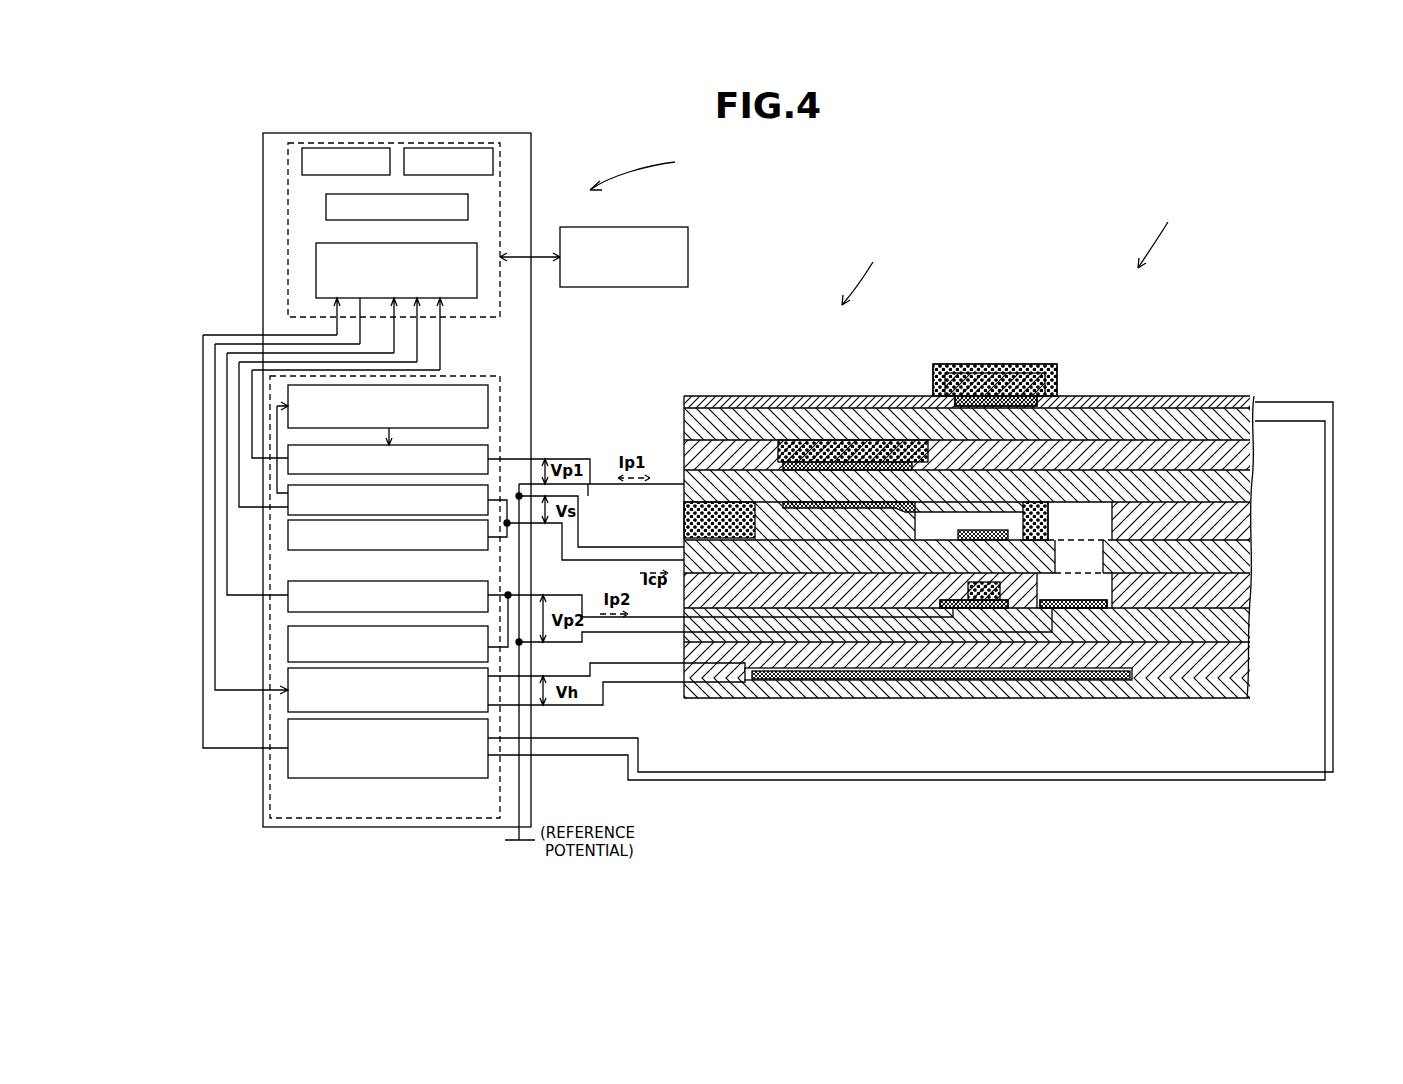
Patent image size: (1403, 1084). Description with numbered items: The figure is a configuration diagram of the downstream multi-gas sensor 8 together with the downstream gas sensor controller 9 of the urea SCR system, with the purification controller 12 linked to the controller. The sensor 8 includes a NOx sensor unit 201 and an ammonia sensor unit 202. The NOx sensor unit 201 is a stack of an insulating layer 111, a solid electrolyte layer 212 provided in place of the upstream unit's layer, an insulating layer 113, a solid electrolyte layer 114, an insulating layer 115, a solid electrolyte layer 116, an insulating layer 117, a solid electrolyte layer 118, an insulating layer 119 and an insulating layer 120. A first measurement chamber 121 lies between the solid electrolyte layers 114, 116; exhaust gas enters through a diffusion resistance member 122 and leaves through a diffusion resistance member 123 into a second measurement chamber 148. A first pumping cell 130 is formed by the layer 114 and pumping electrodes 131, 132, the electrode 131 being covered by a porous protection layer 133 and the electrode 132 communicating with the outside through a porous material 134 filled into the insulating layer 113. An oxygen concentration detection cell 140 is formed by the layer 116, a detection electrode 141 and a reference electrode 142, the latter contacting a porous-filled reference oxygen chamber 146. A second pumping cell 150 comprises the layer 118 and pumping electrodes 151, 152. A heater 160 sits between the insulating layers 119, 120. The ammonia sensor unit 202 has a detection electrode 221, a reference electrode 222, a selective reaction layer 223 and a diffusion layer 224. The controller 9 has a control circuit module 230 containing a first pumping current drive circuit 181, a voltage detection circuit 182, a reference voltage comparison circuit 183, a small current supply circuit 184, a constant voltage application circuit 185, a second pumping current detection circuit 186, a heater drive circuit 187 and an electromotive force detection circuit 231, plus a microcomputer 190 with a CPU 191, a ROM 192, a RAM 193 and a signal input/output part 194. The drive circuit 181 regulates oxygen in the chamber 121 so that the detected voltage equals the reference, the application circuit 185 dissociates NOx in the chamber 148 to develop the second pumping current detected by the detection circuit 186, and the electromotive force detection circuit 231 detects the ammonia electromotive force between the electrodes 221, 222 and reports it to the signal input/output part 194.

The downstream multi-gas sensor 8 is at (1160, 232).
The downstream gas sensor controller 9 is at (640, 167).
The purification controller 12 is at (645, 227).
The insulating layer 111 is at (1255, 398).
The insulating layer 113 is at (1250, 462).
The solid electrolyte layer 114 is at (728, 400).
The insulating layer 115 is at (1250, 515).
The solid electrolyte layer 116 is at (890, 545).
The insulating layer 117 is at (1250, 585).
The solid electrolyte layer 118 is at (1018, 642).
The insulating layer 119 is at (1248, 655).
The insulating layer 120 is at (1248, 682).
The first measurement chamber 121 is at (790, 640).
The diffusion resistance member 122 is at (684, 520).
The diffusion resistance member 123 is at (1048, 520).
The first pumping cell 130 is at (700, 338).
The pumping electrode 131 is at (790, 440).
The pumping electrode 132 is at (800, 502).
The protection layer 133 is at (917, 512).
The porous material 134 is at (866, 430).
The oxygen concentration detection cell 140 is at (940, 735).
The detection electrode 141 is at (940, 608).
The reference electrode 142 is at (963, 600).
The reference oxygen chamber 146 is at (1000, 590).
The second measurement chamber 148 is at (1185, 650).
The second pumping cell 150 is at (1097, 735).
The pumping electrode 151 is at (1060, 608).
The pumping electrode 152 is at (1020, 608).
The heater 160 is at (1110, 680).
The Ip1 drive circuit 181 is at (488, 452).
The Vs detection circuit 182 is at (488, 490).
The reference voltage comparison circuit 183 is at (488, 395).
The Icp supply circuit 184 is at (430, 550).
The Vp2 application circuit 185 is at (288, 648).
The Ip2 detection circuit 186 is at (488, 590).
The heater drive circuit 187 is at (288, 680).
The microcomputer 190 is at (480, 135).
The CPU 191 is at (468, 209).
The ROM 192 is at (302, 162).
The RAM 193 is at (493, 162).
The signal input/output part 194 is at (316, 269).
The NOx sensor unit 201 is at (871, 272).
The ammonia sensor unit 202 is at (905, 296).
The solid electrolyte layer 212 is at (1250, 428).
The detection electrode 221 is at (1000, 396).
The reference electrode 222 is at (996, 401).
The selective reaction layer 223 is at (985, 373).
The diffusion layer 224 is at (940, 364).
The control circuit module 230 is at (478, 362).
The electromotive force detection circuit 231 is at (288, 740).